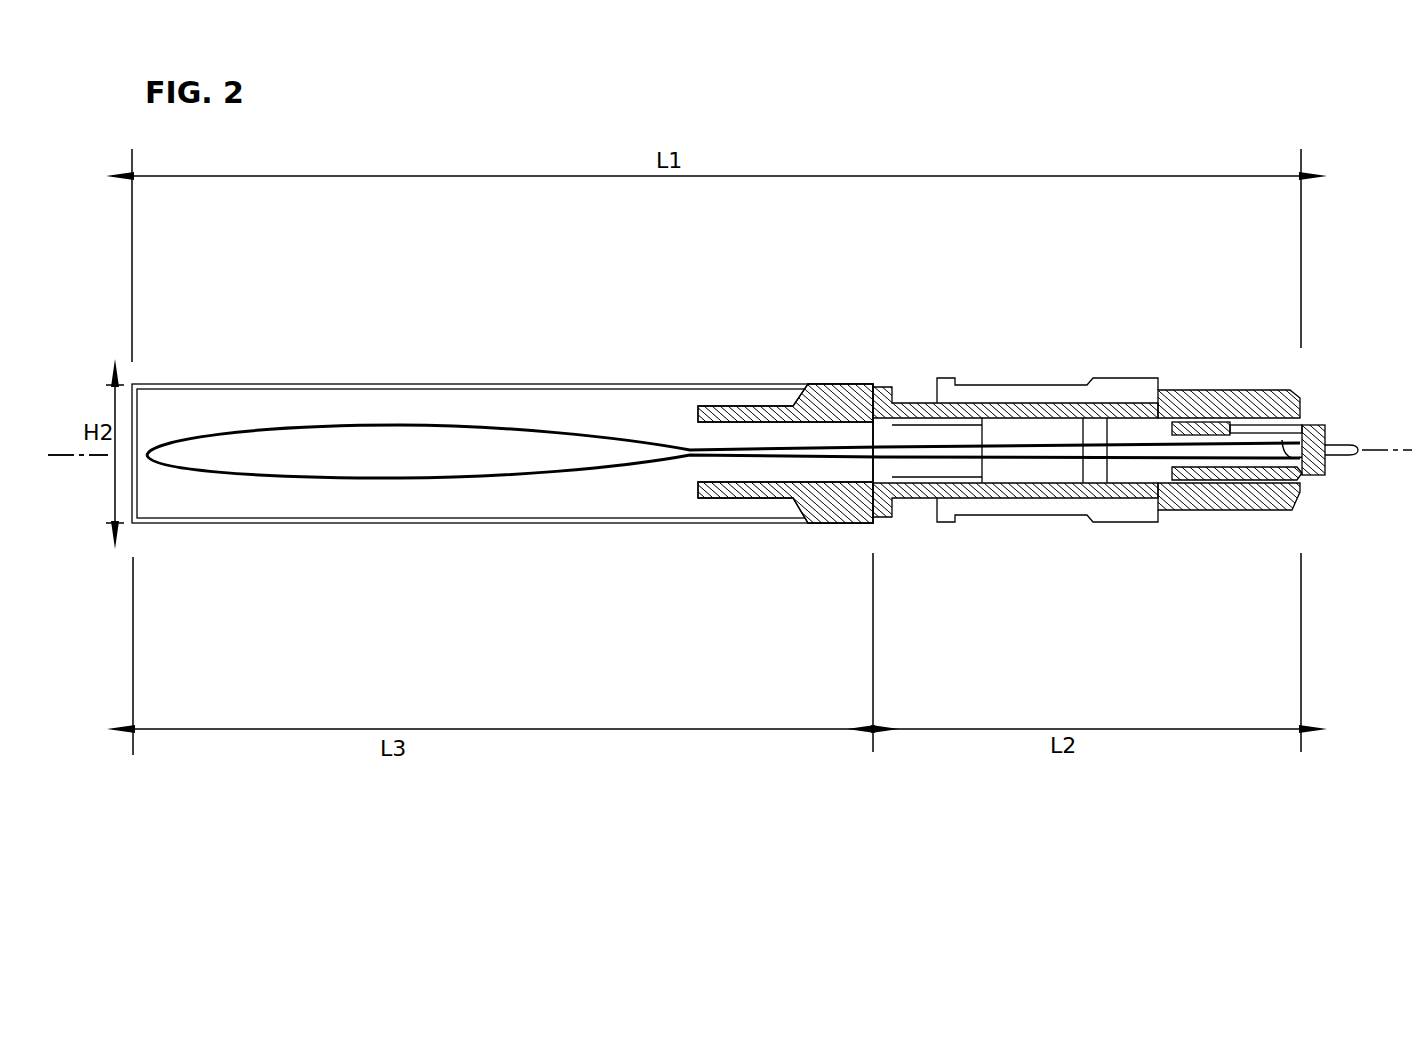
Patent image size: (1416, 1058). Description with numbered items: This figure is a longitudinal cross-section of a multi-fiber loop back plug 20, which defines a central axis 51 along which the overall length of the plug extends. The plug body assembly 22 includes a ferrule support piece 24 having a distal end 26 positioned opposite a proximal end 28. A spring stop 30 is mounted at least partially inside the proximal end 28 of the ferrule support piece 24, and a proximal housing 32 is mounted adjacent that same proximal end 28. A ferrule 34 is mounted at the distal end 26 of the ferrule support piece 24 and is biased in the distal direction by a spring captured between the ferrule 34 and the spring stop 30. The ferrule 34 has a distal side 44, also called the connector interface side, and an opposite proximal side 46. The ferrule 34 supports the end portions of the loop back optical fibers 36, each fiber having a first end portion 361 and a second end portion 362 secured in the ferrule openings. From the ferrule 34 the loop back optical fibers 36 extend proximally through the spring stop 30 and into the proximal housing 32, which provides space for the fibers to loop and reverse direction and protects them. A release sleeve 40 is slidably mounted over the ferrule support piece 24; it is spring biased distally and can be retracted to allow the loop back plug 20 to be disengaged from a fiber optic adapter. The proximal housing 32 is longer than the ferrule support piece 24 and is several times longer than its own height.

The multi-fiber loop back plug 20 is at (1035, 348).
The plug body assembly 22 is at (879, 378).
The ferrule support piece 24 is at (1238, 498).
The distal end 26 is at (1294, 494).
The proximal end 28 is at (873, 517).
The spring stop 30 is at (797, 502).
The proximal housing 32 is at (548, 521).
The ferrule 34 is at (1314, 427).
The loop back optical fibers 36 is at (638, 467).
The first end portion 361 is at (1302, 426).
The second end portion 362 is at (1308, 473).
The release sleeve 40 is at (1120, 378).
The distal side 44 is at (1326, 436).
The proximal side 46 is at (1282, 440).
The central axis 51 is at (87, 458).